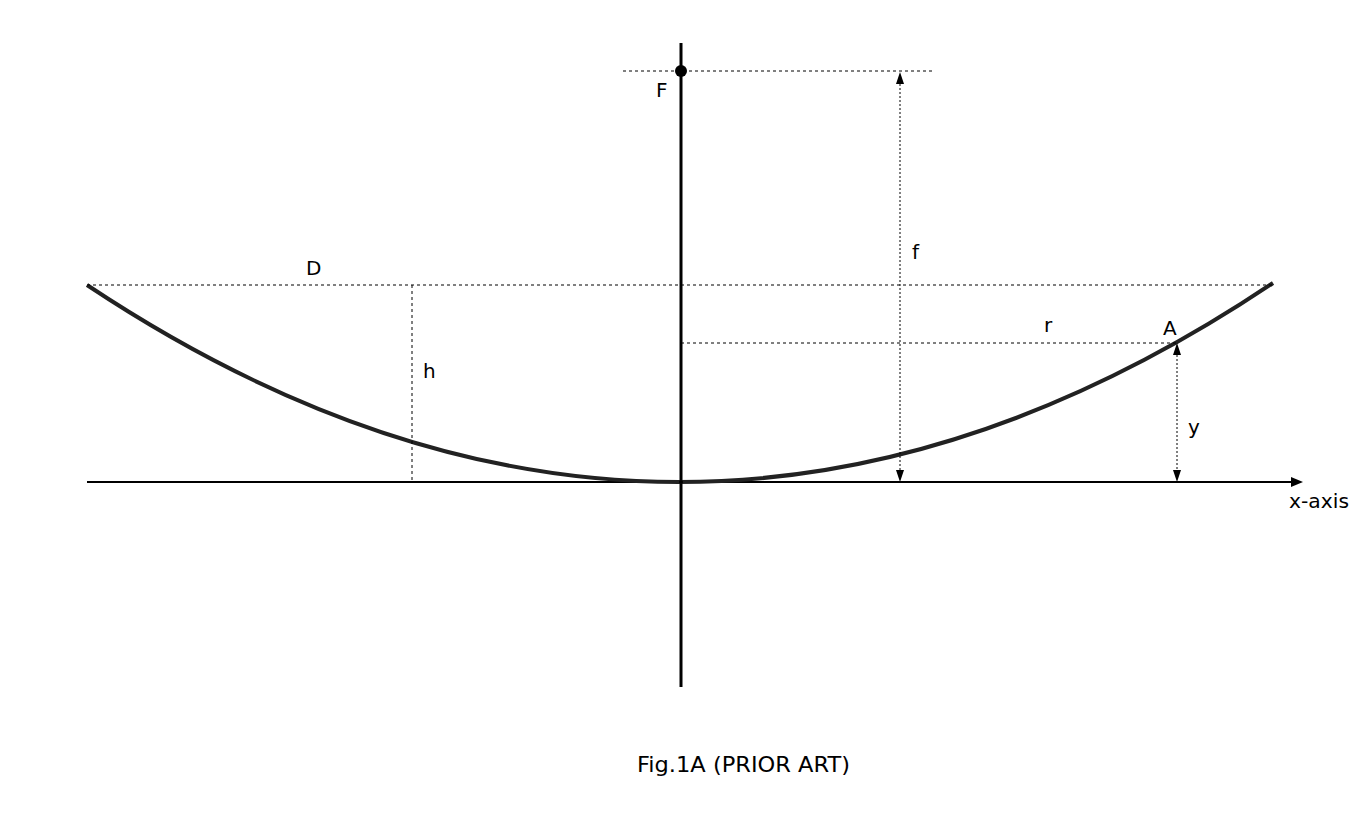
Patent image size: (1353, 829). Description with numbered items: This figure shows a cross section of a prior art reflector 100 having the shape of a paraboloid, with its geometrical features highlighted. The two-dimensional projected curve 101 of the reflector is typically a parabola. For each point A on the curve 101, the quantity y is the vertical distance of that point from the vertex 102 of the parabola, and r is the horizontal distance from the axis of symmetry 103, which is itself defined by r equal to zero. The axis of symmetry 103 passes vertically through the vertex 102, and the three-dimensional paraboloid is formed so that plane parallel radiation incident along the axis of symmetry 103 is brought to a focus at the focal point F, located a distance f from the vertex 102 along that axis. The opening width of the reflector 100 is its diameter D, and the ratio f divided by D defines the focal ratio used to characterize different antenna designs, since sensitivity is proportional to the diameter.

The reflector 100 is at (1065, 677).
The two-dimensional projected curve 101 is at (188, 347).
The vertex 102 is at (677, 487).
The axis of symmetry 103 is at (682, 175).